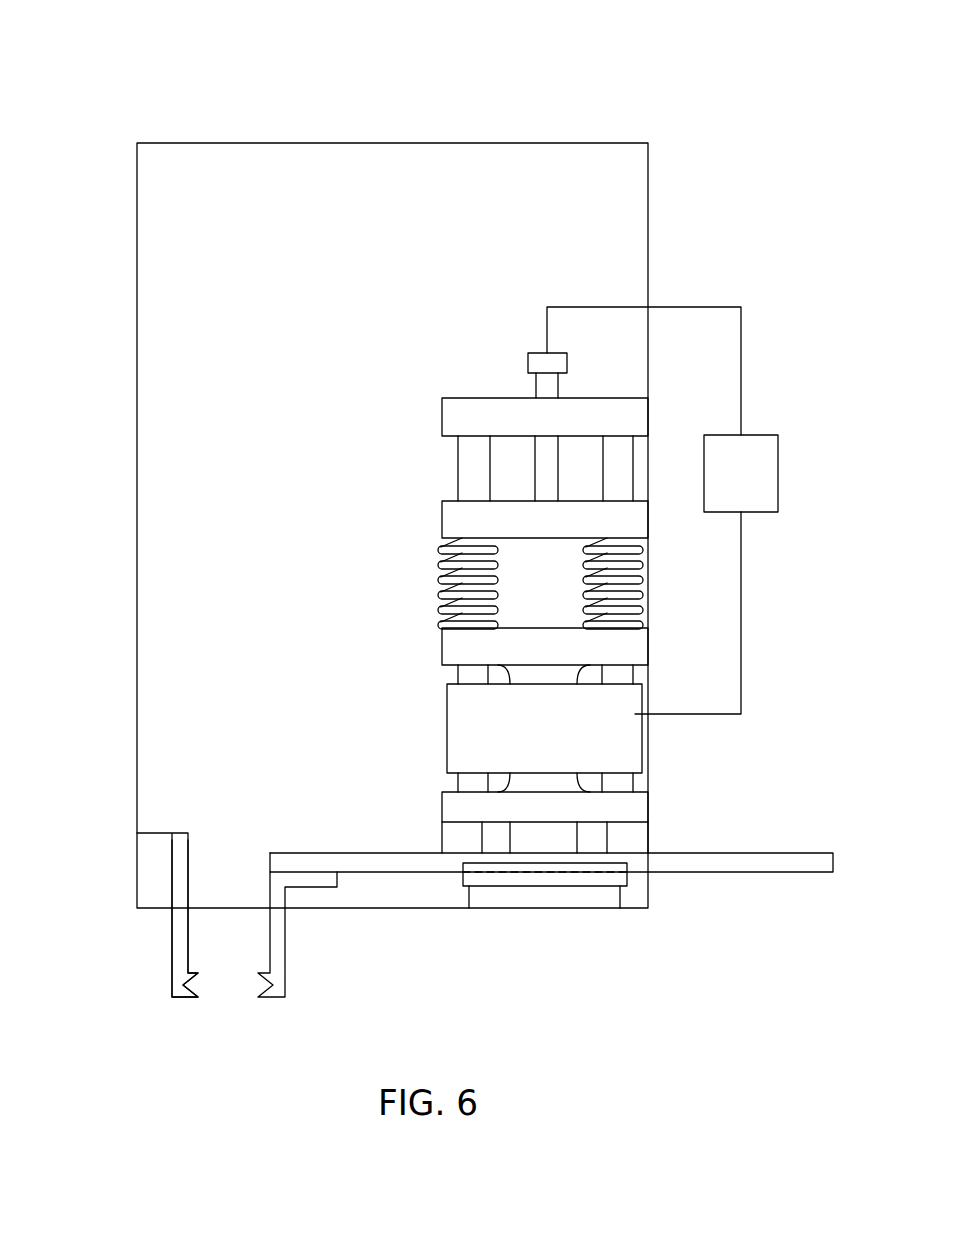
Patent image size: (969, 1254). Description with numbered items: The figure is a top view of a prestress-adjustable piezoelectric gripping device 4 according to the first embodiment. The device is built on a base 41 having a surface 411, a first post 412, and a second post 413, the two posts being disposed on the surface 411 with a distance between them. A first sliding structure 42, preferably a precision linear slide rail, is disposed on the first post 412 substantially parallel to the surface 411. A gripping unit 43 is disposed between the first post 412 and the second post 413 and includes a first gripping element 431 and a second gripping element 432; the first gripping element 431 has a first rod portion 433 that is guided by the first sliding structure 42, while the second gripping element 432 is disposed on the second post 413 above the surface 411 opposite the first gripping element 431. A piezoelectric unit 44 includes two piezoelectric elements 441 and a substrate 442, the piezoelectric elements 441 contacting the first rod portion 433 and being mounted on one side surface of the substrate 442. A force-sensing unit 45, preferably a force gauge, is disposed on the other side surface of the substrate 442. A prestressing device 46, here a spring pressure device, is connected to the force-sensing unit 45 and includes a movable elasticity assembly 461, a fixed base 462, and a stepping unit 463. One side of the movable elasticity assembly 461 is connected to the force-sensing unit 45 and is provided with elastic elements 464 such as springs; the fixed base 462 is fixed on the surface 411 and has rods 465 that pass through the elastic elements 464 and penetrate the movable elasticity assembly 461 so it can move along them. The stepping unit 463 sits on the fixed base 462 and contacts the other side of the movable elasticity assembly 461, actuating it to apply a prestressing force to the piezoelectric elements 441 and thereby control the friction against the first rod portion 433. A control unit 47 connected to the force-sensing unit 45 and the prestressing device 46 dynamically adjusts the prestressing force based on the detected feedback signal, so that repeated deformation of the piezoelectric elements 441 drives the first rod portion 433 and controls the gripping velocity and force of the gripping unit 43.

The prestress-adjustable piezoelectric gripping device 4 is at (128, 70).
The base 41 is at (365, 570).
The surface 411 is at (157, 362).
The first post 412 is at (590, 900).
The second post 413 is at (143, 877).
The first sliding structure 42 is at (467, 878).
The gripping unit 43 is at (502, 992).
The first gripping element 431 is at (273, 995).
The second gripping element 432 is at (183, 995).
The first rod portion 433 is at (775, 860).
The piezoelectric unit 44 is at (559, 791).
The piezoelectric elements 441 is at (493, 832).
The substrate 442 is at (453, 806).
The force-sensing unit 45 is at (455, 723).
The prestressing device 46 is at (510, 492).
The movable elasticity assembly 461 is at (405, 596).
The fixed base 462 is at (447, 413).
The stepping unit 463 is at (540, 362).
The elastic element 464 is at (447, 548).
The rod 465 is at (472, 475).
The control unit 47 is at (765, 478).